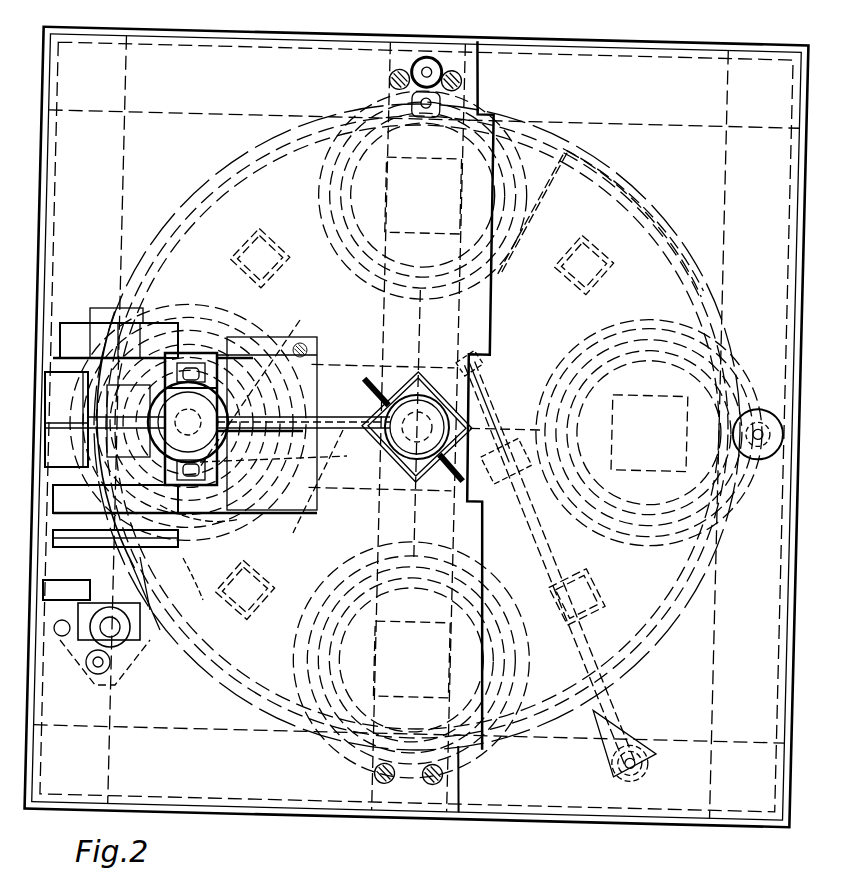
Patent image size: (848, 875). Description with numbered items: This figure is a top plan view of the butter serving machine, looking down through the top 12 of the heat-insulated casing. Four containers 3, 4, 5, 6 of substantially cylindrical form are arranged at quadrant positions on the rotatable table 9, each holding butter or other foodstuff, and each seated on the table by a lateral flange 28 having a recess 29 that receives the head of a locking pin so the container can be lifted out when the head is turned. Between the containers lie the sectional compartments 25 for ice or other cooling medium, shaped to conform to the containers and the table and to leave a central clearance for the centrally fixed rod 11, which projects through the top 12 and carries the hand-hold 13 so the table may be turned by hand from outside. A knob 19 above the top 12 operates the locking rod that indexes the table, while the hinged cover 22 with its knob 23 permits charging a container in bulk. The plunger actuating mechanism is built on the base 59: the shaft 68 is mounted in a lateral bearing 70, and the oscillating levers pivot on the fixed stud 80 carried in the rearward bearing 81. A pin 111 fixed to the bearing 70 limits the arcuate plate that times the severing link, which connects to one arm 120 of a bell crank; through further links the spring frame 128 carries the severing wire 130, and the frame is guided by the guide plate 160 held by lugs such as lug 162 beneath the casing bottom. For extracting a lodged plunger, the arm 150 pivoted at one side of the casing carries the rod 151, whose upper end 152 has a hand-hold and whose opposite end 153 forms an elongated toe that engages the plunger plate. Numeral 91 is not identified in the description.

The container 3 is at (255, 344).
The container 4 is at (372, 296).
The container 5 is at (550, 374).
The container 6 is at (512, 620).
The table 9 is at (541, 132).
The rod 11 is at (390, 458).
The top 12 is at (220, 772).
The hand-hold 13 is at (368, 382).
The knob 19 is at (421, 60).
The hinged cover 22 is at (730, 71).
The knob 23 is at (758, 455).
The sectional compartments 25 is at (265, 272).
The lateral flange 28 is at (506, 270).
The recess 29 is at (306, 363).
The base 59 is at (181, 410).
The shaft 68 is at (179, 422).
The lateral bearing 70 is at (152, 578).
The fixed stud 80 is at (297, 342).
The rearward bearing 81 is at (325, 455).
The spindle bearing 91 is at (188, 419).
The pin 111 is at (159, 593).
The arm 120 is at (170, 541).
The spring frame 128 is at (240, 596).
The severing wire 130 is at (235, 516).
The arm 150 is at (657, 755).
The rod 151 is at (540, 546).
The upper end 152 is at (460, 360).
The opposite end 153 is at (601, 651).
The guide plate 160 is at (258, 316).
The lug 162 is at (160, 276).